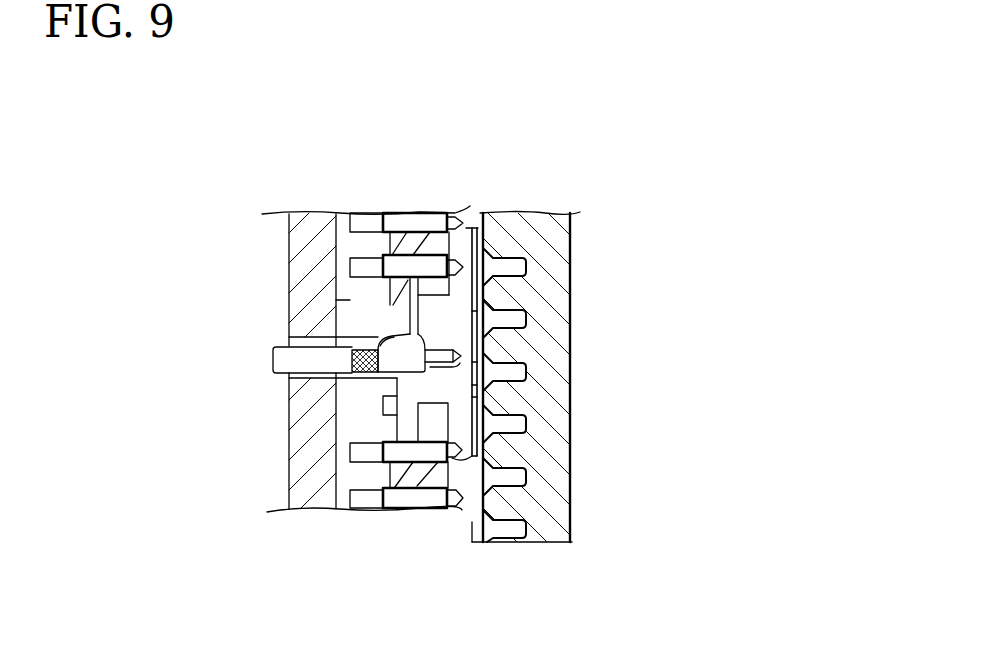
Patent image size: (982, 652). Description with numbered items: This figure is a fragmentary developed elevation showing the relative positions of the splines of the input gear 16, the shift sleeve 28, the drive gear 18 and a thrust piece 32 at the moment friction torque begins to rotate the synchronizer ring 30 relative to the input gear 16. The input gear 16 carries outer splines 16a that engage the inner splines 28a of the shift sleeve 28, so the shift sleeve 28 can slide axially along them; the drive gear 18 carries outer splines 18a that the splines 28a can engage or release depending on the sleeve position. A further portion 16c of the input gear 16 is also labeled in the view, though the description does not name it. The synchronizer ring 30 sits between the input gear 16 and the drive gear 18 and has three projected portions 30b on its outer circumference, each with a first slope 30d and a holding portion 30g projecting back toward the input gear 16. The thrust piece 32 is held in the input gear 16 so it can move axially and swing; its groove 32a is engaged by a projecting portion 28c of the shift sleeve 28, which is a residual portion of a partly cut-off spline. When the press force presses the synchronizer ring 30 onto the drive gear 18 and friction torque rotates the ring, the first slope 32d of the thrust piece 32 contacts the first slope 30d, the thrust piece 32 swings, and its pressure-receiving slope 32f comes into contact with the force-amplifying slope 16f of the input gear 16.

The input gear 16 is at (388, 337).
The outer splines 16a is at (420, 466).
The housing upper portion 16c is at (320, 235).
The force-amplifying slope 16f is at (390, 339).
The drive gear 18 is at (557, 220).
The outer splines 18a is at (510, 228).
The shift sleeve 28 is at (371, 509).
The inner splines 28a is at (366, 216).
The projecting portion 28c is at (352, 305).
The synchronizer ring 30 is at (469, 227).
The projected portion 30b is at (430, 311).
The first slope 30d is at (437, 363).
The holding portion 30g is at (407, 385).
The thrust piece 32 is at (272, 364).
The groove 32a is at (361, 378).
The first slope 32d is at (458, 345).
The pressure-receiving slope 32f is at (392, 341).